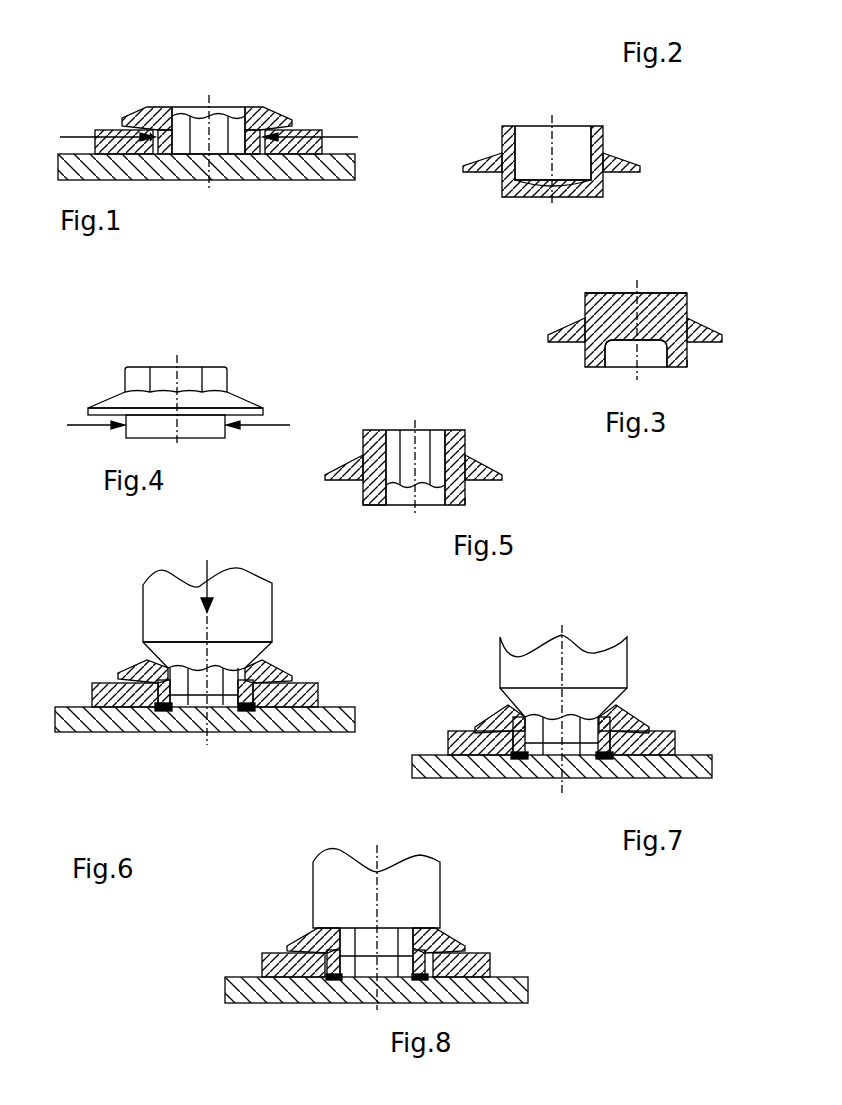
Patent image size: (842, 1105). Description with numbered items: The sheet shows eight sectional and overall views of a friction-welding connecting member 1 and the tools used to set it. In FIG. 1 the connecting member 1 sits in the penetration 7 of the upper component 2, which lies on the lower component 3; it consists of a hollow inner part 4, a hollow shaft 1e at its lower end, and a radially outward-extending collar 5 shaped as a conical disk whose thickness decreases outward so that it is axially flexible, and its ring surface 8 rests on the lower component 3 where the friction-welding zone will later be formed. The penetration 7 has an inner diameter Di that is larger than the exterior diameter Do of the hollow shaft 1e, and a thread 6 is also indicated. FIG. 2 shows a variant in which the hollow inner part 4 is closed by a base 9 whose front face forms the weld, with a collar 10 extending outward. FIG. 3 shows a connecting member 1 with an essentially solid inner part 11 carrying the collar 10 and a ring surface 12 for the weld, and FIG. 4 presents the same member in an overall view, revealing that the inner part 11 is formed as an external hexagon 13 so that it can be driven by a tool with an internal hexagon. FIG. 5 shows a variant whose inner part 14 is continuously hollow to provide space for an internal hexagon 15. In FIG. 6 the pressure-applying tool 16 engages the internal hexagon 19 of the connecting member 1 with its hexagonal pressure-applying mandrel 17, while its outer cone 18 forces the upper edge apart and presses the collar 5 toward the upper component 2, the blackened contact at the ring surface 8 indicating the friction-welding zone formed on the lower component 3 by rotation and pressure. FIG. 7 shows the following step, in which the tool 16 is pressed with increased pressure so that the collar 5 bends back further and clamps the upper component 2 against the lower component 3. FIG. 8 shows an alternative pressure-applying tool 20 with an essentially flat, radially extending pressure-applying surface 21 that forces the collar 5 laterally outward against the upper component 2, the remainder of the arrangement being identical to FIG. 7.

In FIG. 1, the connecting member 1 is at (258, 108).
In FIG. 2, the connecting member 1 is at (604, 130).
In FIG. 3, the connecting member 1 is at (690, 300).
In FIG. 4, the connecting member 1 is at (215, 360).
In FIG. 5, the connecting member 1 is at (470, 450).
In FIG. 6, the connecting member 1 is at (150, 665).
In FIG. 7, the connecting member 1 is at (500, 720).
In FIG. 8, the connecting member 1 is at (305, 945).
In FIG. 1, the hollow shaft 1e is at (218, 147).
In FIG. 3, the hollow shaft 1e is at (690, 360).
In FIG. 5, the hollow shaft 1e is at (470, 492).
In FIG. 1, the upper component 2 is at (305, 140).
In FIG. 6, the upper component 2 is at (300, 697).
In FIG. 7, the upper component 2 is at (665, 740).
In FIG. 8, the upper component 2 is at (470, 968).
In FIG. 1, the lower component 3 is at (305, 172).
In FIG. 6, the lower component 3 is at (322, 726).
In FIG. 7, the lower component 3 is at (465, 760).
In FIG. 8, the lower component 3 is at (255, 996).
In FIG. 1, the inner part 4 is at (240, 118).
In FIG. 2, the inner part 4 is at (528, 140).
In FIG. 6, the inner part 4 is at (228, 706).
In FIG. 1, the collar 5 is at (148, 107).
In FIG. 6, the collar 5 is at (122, 678).
In FIG. 7, the collar 5 is at (480, 730).
In FIG. 8, the collar 5 is at (435, 935).
In FIG. 1, the thread 6 is at (205, 118).
In FIG. 1, the penetration 7 is at (185, 146).
In FIG. 1, the ring surface 8 is at (242, 147).
In FIG. 6, the ring surface 8 is at (160, 708).
In FIG. 7, the ring surface 8 is at (517, 756).
In FIG. 8, the ring surface 8 is at (377, 977).
In FIG. 2, the base 9 is at (535, 192).
In FIG. 2, the collar 10 is at (484, 165).
In FIG. 3, the collar 10 is at (560, 330).
In FIG. 4, the collar 10 is at (232, 403).
In FIG. 5, the collar 10 is at (413, 467).
In FIG. 3, the inner part 11 is at (605, 300).
In FIG. 4, the inner part 11 is at (180, 367).
In FIG. 3, the ring surface 12 is at (600, 365).
In FIG. 5, the ring surface 12 is at (375, 505).
In FIG. 4, the external hexagon 13 is at (140, 378).
In FIG. 5, the inner part 14 is at (408, 490).
In FIG. 5, the internal hexagon 15 is at (420, 455).
In FIG. 6, the pressure-applying tool 16 is at (247, 597).
In FIG. 7, the pressure-applying tool 16 is at (570, 660).
In FIG. 6, the pressure-applying mandrel 17 is at (235, 660).
In FIG. 6, the outer cone 18 is at (250, 653).
In FIG. 7, the outer cone 18 is at (592, 695).
In FIG. 6, the internal hexagon 19 is at (195, 700).
In FIG. 8, the pressure-applying tool 20 is at (410, 882).
In FIG. 8, the pressure-applying surface 21 is at (345, 928).
In FIG. 1, the inner diameter Di is at (186, 132).
In FIG. 4, the exterior diameter Do is at (196, 427).